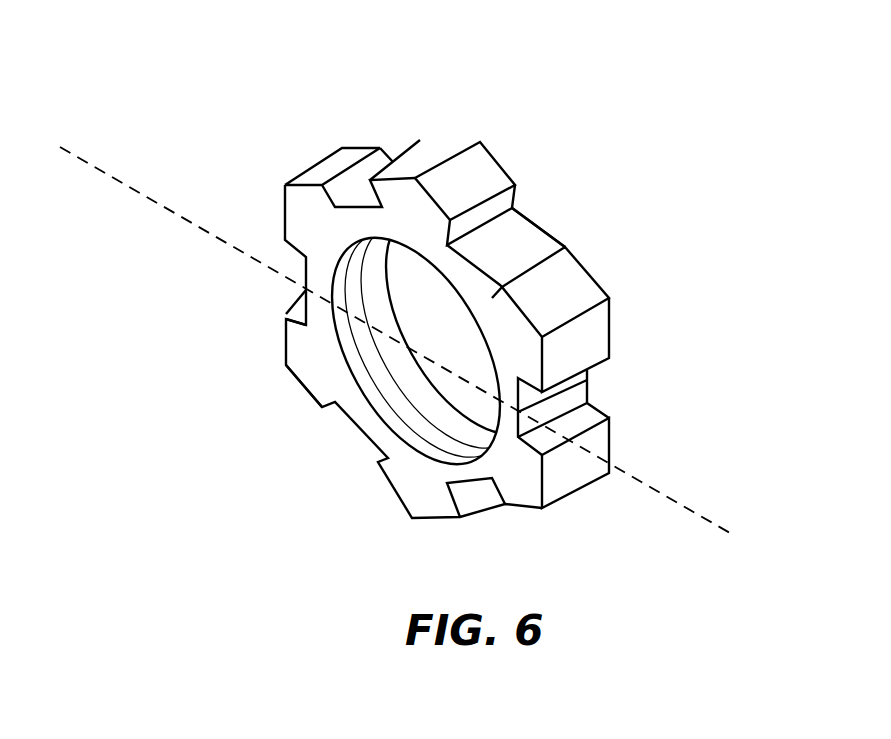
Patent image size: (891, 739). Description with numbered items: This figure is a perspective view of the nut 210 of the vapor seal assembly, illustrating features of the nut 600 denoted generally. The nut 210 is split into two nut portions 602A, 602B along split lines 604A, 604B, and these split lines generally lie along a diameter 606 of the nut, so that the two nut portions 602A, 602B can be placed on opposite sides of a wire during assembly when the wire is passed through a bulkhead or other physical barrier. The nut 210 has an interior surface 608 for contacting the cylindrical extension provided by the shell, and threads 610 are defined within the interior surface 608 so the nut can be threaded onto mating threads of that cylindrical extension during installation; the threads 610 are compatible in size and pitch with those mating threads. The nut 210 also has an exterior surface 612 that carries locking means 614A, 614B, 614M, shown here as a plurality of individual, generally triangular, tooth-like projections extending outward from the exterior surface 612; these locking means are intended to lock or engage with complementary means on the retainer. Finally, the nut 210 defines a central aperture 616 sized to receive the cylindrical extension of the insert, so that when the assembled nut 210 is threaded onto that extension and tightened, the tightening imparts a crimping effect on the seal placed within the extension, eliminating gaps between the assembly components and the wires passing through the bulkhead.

The features of the nut 600 is at (220, 67).
The nut portion 602A is at (557, 153).
The nut portion 602B is at (245, 513).
The split line 604A is at (590, 388).
The split line 604B is at (302, 293).
The diameter 606 is at (120, 181).
The interior surface 608 is at (369, 397).
The threads 610 is at (455, 457).
The exterior surface 612 is at (503, 250).
The locking means 614A is at (406, 188).
The locking means 614B is at (530, 338).
The locking means 614M is at (296, 217).
The aperture 616 is at (422, 302).
The nut 210 is at (767, 138).